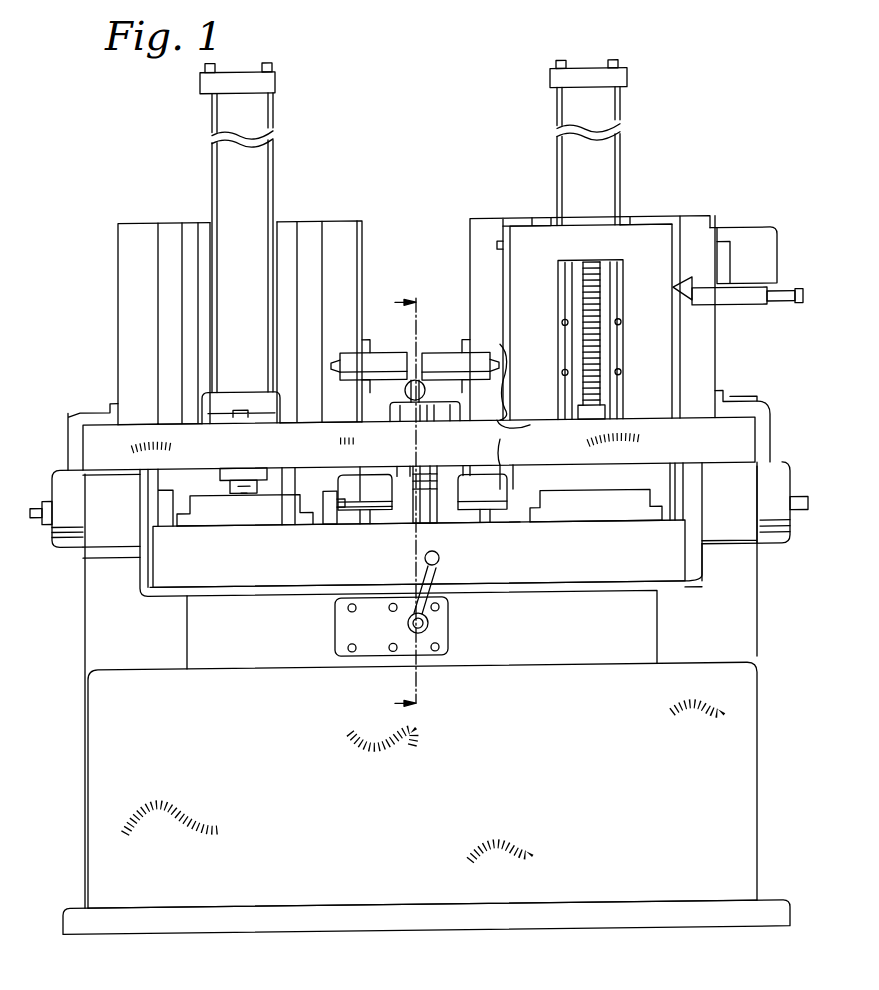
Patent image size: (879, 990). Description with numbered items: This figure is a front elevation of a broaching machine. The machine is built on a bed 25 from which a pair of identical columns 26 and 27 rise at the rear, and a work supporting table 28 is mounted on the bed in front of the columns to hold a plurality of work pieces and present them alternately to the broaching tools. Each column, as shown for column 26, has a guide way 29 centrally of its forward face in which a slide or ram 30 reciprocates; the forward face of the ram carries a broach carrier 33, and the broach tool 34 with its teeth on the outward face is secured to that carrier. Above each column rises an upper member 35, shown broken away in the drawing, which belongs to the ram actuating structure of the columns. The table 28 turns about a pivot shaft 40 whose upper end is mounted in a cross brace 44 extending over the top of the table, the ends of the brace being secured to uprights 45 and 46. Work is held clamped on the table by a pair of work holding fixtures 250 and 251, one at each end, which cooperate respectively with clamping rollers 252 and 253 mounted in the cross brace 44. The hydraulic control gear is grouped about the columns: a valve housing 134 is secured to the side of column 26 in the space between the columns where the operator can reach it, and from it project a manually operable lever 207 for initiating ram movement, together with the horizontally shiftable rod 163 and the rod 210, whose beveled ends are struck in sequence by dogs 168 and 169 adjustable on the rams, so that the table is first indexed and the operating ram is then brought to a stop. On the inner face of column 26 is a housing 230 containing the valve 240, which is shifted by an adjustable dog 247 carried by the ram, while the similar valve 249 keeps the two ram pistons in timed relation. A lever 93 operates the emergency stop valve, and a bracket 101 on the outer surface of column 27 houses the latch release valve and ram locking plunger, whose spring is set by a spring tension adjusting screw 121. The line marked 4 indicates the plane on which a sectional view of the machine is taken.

The section line 4- 4 is at (416, 508).
The bed 25 is at (760, 756).
The column 26 is at (705, 221).
The column 27 is at (148, 210).
The work supporting table 28 is at (163, 566).
The guide way 29 is at (448, 635).
The slide or ram 30 is at (652, 230).
The broach carrier 33 is at (605, 270).
The broach tool 34 is at (598, 300).
The piston cylinder 35 is at (218, 170).
The pivot shaft 40 is at (398, 523).
The cross brace 44 is at (745, 428).
The upright 45 is at (740, 486).
The upright 46 is at (93, 504).
The lever 93 is at (436, 585).
The bracket 101 is at (775, 542).
The spring tension adjusting screw 121 is at (802, 550).
The valve housing 134 is at (466, 523).
The rod 163 is at (518, 452).
The dog 168 is at (332, 529).
The dog 169 is at (497, 244).
The manually operable lever 207 is at (425, 391).
The rod 210 is at (475, 531).
The housing 230 is at (460, 347).
The valve 240 is at (500, 345).
The adjustable dog 247 is at (526, 432).
The valve 249 is at (372, 365).
The work holding fixture 250 is at (246, 526).
The work holding fixture 251 is at (640, 520).
The clamping roller 252 is at (238, 501).
The clamping roller 253 is at (600, 502).